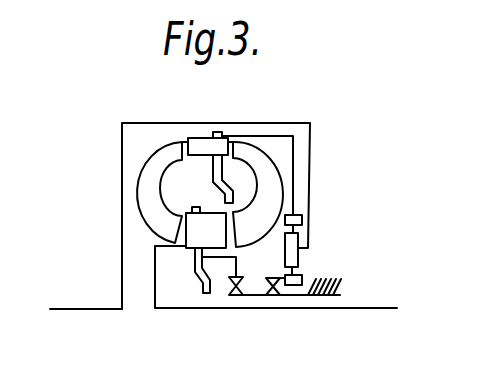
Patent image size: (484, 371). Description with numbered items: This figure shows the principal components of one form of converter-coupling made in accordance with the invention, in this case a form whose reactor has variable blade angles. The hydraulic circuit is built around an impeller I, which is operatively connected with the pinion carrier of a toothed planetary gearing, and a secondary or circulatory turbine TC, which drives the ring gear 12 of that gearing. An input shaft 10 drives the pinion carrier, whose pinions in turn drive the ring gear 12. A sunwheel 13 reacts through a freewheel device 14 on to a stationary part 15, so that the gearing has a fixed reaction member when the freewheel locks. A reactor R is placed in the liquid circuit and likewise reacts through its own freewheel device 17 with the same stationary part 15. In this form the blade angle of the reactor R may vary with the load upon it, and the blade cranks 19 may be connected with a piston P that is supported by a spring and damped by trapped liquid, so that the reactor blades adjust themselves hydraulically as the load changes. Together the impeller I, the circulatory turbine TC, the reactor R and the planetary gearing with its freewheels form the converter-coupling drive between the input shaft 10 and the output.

The secondary or circulatory turbine TC is at (193, 150).
The impeller I is at (143, 188).
The reactor R is at (193, 238).
The pump P is at (298, 237).
The input shaft 10 is at (77, 309).
The ring gear 12 is at (301, 213).
The sunwheel 13 is at (301, 279).
The freewheel device 14 is at (271, 297).
The stationary part 15 is at (343, 283).
The freewheel device 17 is at (236, 299).
The blade cranks 19 is at (207, 292).